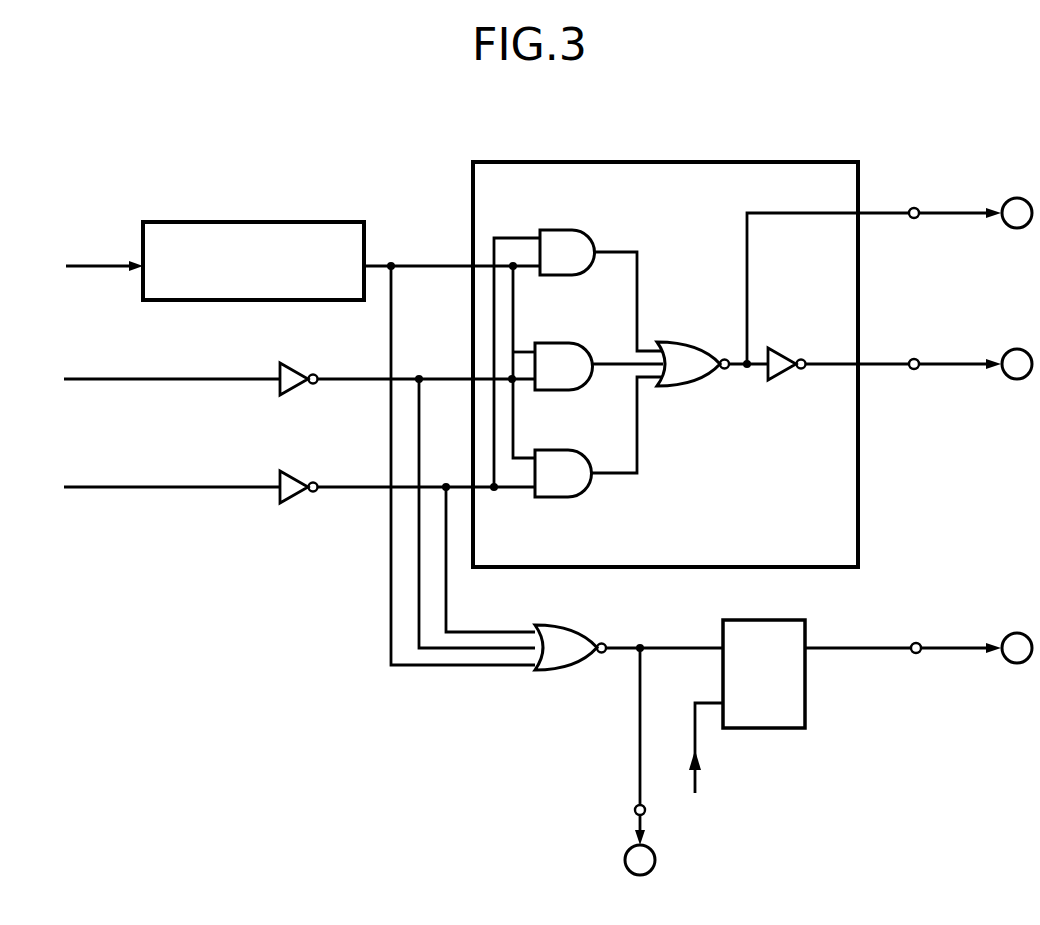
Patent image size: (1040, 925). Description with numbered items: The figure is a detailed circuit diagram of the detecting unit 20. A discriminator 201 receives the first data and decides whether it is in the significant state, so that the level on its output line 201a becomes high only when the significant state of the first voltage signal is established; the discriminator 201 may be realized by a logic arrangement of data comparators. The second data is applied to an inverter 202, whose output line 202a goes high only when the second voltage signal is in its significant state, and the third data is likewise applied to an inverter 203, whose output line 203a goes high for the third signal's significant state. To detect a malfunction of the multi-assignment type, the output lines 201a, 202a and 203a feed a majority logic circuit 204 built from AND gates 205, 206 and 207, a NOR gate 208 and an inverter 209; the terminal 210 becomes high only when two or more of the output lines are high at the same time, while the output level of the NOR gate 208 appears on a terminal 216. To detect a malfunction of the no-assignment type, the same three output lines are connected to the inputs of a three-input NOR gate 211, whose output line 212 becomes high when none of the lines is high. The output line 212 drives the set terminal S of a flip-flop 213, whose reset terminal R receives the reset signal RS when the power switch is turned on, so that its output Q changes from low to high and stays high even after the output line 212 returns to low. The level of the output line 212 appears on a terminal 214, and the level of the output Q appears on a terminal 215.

The detecting unit 20 is at (756, 129).
The discriminator 201 is at (256, 222).
The output line 201a is at (390, 262).
The inverter 202 is at (296, 359).
The output line 202a is at (352, 379).
The inverter 203 is at (282, 474).
The output line 203a is at (350, 487).
The majority logic circuit 204 is at (647, 162).
The AND gate 205 is at (573, 234).
The AND gate 206 is at (566, 349).
The AND gate 207 is at (563, 449).
The NOR gate 208 is at (682, 347).
The inverter 209 is at (786, 350).
The terminal 210 is at (914, 358).
The three input NOR gate 211 is at (552, 631).
The output line 212 is at (656, 646).
The flip-flop 213 is at (746, 621).
The terminal 214 is at (634, 810).
The terminal 215 is at (916, 641).
The terminal 216 is at (914, 208).